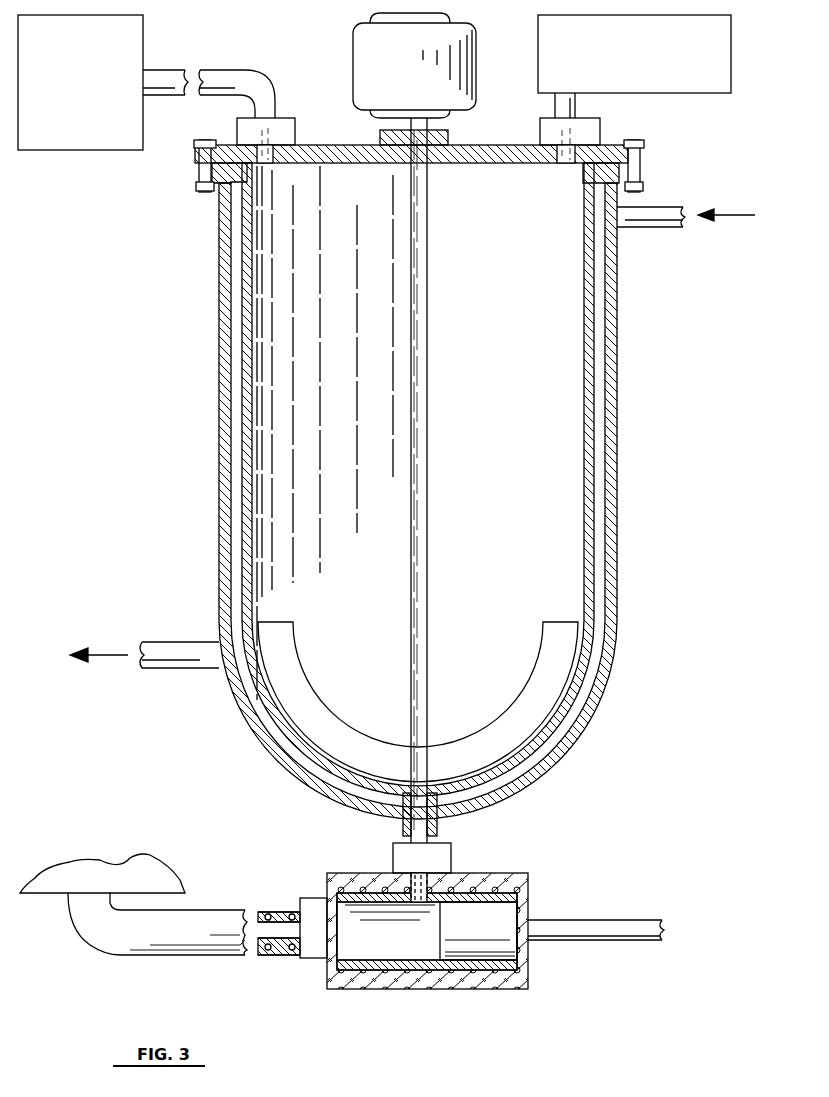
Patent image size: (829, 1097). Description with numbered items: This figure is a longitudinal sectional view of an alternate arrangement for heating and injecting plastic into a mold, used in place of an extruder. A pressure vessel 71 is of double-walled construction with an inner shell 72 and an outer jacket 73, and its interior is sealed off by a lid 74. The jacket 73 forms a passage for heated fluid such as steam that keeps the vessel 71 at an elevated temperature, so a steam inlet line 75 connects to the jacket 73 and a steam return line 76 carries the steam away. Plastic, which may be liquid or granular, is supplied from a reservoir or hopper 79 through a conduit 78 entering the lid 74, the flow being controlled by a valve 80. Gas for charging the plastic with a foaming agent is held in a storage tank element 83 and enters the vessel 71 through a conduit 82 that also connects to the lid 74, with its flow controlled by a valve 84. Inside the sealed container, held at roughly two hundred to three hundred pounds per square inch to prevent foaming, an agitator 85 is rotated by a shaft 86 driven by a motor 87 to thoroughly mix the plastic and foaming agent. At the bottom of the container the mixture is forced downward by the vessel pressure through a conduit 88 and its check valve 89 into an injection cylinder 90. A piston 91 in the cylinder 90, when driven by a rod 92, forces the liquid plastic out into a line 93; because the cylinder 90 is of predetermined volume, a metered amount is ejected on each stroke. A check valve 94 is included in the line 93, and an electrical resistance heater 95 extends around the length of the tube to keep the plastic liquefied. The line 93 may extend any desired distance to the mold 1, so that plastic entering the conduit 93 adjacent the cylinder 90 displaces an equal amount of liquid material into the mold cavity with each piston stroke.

The mold 1 is at (52, 895).
The pressure vessel 71 is at (626, 499).
The inner shell 72 is at (585, 508).
The outer jacket 73 is at (603, 455).
The lid 74 is at (454, 165).
The steam inlet line 75 is at (632, 229).
The steam return line 76 is at (178, 645).
The conduit 78 is at (578, 103).
The reservoir or hopper 79 is at (648, 85).
The valve 80 is at (540, 135).
The conduit 82 is at (218, 80).
The storage tank element 83 is at (62, 135).
The valve 84 is at (270, 135).
The agitator 85 is at (553, 692).
The shaft 86 is at (425, 395).
The motor 87 is at (372, 60).
The conduit 88 is at (440, 835).
The check valve 89 is at (410, 860).
The cylinder 90 is at (527, 898).
The piston 91 is at (505, 938).
The rod 92 is at (578, 922).
The line 93 is at (275, 932).
The check valve 94 is at (311, 908).
The electrical resistance heater 95 is at (285, 913).